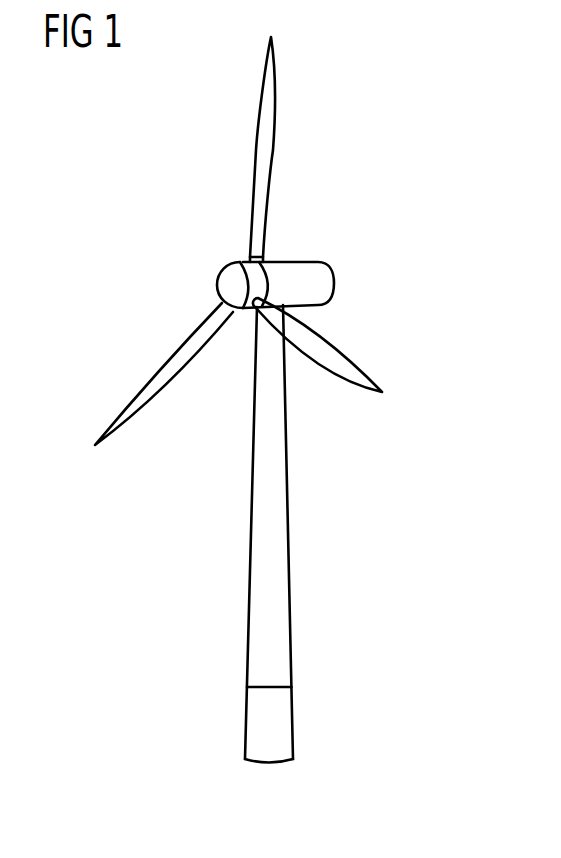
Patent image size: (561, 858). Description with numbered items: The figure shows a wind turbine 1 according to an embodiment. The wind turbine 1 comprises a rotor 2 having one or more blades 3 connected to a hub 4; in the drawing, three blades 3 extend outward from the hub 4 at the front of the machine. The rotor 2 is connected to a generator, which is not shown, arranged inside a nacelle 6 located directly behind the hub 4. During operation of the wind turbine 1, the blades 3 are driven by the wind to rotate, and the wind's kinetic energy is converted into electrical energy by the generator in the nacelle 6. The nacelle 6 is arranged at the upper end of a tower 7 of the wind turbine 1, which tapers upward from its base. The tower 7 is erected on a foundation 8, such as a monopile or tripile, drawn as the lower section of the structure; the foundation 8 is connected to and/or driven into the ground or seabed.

The wind turbine 1 is at (392, 185).
The rotor 2 is at (210, 235).
The blades 3 is at (267, 152).
The hub 4 is at (228, 280).
The nacelle 6 is at (323, 282).
The tower 7 is at (280, 525).
The foundation 8 is at (283, 723).